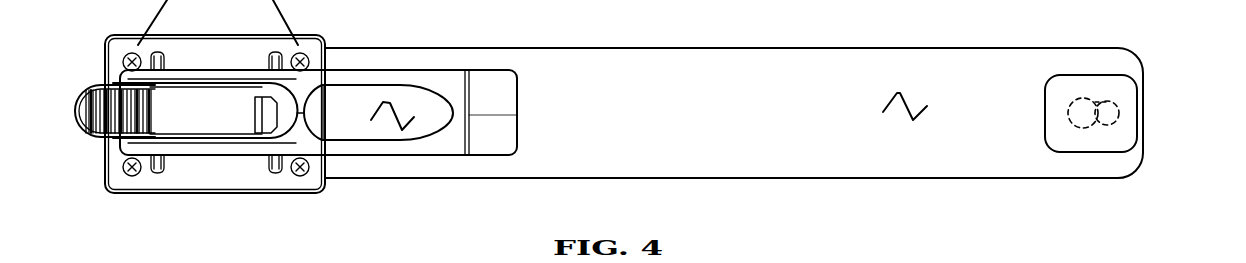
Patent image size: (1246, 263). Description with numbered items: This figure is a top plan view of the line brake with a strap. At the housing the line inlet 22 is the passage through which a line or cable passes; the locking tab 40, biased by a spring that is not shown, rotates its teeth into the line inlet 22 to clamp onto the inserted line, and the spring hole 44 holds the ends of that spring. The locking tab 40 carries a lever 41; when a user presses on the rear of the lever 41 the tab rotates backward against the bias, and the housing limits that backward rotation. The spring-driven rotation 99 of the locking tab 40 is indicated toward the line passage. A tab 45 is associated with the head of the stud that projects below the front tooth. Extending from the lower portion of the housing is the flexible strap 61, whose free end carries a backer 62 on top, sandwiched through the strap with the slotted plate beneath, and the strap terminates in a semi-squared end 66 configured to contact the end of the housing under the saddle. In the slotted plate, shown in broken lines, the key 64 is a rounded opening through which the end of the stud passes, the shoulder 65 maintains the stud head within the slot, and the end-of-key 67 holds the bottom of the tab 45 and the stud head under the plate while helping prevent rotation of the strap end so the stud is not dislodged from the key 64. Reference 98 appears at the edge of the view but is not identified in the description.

The line inlet 22 is at (377, 108).
The locking tab 40 is at (82, 133).
The lever 41 is at (203, 137).
The spring hole 44 is at (133, 262).
The tab 45 is at (273, 123).
The flexible strap 61 is at (903, 118).
The backer 62 is at (1110, 75).
The key 64 is at (1082, 125).
The shoulder 65 is at (1110, 125).
The semi-squared end 66 is at (1143, 98).
The end-of-key 67 is at (1117, 115).
The component 98 is at (66, 256).
The rotation 99 is at (250, 262).